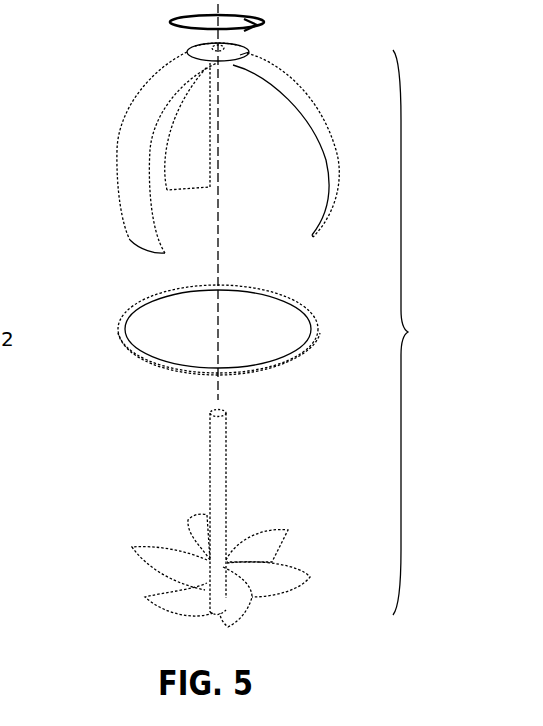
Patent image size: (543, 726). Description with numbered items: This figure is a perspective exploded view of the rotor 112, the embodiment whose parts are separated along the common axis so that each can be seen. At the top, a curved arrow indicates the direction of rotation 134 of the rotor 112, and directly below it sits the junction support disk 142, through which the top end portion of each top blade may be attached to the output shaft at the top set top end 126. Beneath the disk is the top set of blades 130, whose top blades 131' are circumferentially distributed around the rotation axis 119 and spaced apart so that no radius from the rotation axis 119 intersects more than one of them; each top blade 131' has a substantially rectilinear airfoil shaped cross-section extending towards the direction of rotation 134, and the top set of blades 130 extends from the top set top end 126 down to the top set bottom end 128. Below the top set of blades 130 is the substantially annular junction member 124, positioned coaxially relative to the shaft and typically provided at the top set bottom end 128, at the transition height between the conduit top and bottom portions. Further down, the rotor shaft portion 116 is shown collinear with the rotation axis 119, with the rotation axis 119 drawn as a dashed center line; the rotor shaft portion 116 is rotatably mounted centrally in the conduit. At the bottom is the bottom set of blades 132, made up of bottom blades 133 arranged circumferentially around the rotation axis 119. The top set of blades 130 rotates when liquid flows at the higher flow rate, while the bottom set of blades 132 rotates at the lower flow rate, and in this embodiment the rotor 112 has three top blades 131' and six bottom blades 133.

The rotor 112 is at (423, 332).
The rotor shaft portion 116 is at (220, 450).
The rotation axis 119 is at (217, 397).
The annular junction member 124 is at (118, 337).
The top set top end 126 is at (182, 52).
The top set bottom end 128 is at (147, 252).
The top set of blades 130 is at (302, 67).
The top blade 131' is at (105, 126).
The bottom set of blades 132 is at (250, 611).
The bottom blade 133 is at (165, 602).
The direction of rotation 134 is at (170, 24).
The junction support disk 142 is at (240, 55).